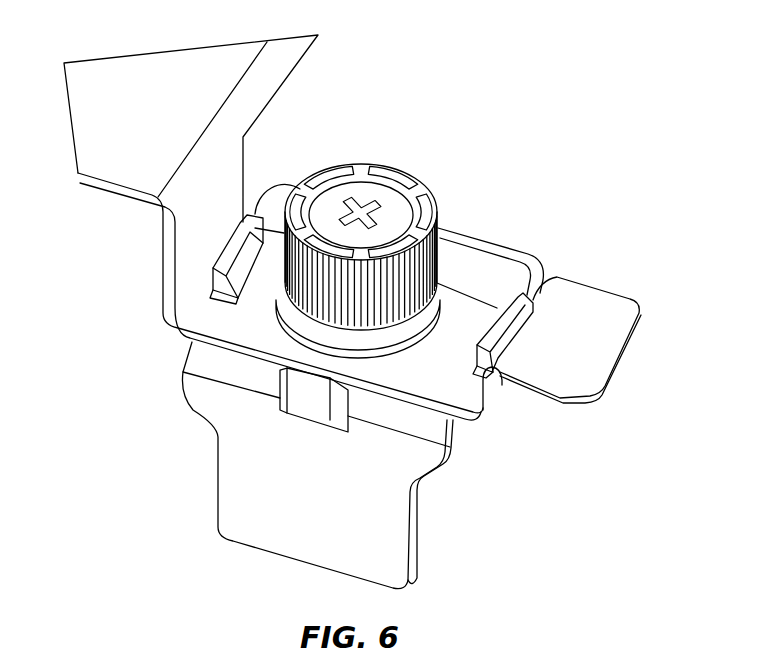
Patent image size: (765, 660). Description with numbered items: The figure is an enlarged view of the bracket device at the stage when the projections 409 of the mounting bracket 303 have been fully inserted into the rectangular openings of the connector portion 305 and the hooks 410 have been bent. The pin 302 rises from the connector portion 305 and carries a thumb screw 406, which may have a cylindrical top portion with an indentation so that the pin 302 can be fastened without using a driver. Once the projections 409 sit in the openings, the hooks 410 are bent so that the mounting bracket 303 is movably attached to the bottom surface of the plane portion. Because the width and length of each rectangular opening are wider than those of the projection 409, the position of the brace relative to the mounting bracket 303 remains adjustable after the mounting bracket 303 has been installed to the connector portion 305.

The pin 302 is at (410, 143).
The thumb screw 406 is at (397, 206).
The connector portion 305 is at (152, 338).
The mounting bracket 303 is at (197, 448).
The projection 409 is at (243, 240).
The hook 410 is at (257, 217).